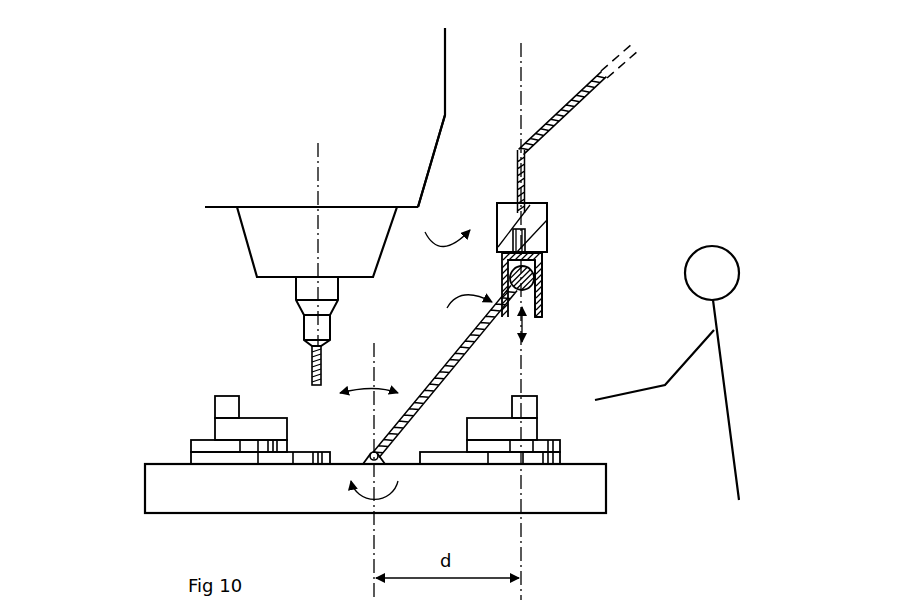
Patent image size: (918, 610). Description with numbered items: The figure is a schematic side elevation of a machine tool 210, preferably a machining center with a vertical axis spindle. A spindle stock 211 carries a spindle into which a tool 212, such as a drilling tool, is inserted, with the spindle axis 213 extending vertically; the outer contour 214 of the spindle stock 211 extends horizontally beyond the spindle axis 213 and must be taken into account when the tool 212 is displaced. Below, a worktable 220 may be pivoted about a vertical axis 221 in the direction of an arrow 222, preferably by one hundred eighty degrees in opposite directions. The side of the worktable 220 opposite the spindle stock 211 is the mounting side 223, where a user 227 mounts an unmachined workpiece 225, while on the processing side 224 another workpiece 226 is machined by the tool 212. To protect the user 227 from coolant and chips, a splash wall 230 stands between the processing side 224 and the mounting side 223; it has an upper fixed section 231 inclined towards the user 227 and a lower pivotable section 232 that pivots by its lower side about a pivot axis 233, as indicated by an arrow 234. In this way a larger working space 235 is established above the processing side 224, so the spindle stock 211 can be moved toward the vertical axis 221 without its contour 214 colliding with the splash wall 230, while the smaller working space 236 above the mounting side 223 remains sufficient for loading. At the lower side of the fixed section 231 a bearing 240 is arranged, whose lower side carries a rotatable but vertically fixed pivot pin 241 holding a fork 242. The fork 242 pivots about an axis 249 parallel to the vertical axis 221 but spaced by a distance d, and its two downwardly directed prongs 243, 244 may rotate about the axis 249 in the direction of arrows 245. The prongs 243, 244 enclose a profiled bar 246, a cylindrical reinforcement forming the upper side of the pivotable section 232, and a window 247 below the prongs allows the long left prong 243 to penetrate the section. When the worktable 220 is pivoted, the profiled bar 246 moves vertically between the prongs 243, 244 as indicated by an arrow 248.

The machine tool 210 is at (697, 147).
The spindle stock 211 is at (430, 63).
The tool 212 is at (312, 372).
The spindle axis 213 is at (318, 165).
The outer contour 214 is at (429, 172).
The worktable 220 is at (601, 487).
The vertical axis 221 is at (377, 595).
The arrow 222 is at (398, 482).
The mounting side 223 is at (583, 461).
The processing side 224 is at (158, 461).
The unmachined workpiece 225 is at (531, 427).
The workpiece 226 is at (215, 427).
The user 227 is at (728, 407).
The splash wall 230 is at (550, 204).
The upper fixed section 231 is at (604, 79).
The lower pivotable section 232 is at (462, 350).
The pivot axis 233 is at (370, 455).
The arrow 234 is at (362, 388).
The working space 235 is at (334, 276).
The working space 236 is at (630, 271).
The bearing 240 is at (498, 202).
The pivot pin 241 is at (527, 237).
The fork 242 is at (566, 281).
The prong 243 is at (510, 320).
The prong 244 is at (541, 298).
The arrows 245 is at (432, 233).
The profiled bar 246 is at (472, 283).
The window 247 is at (457, 313).
The arrow 248 is at (526, 330).
The axis 249 is at (522, 57).